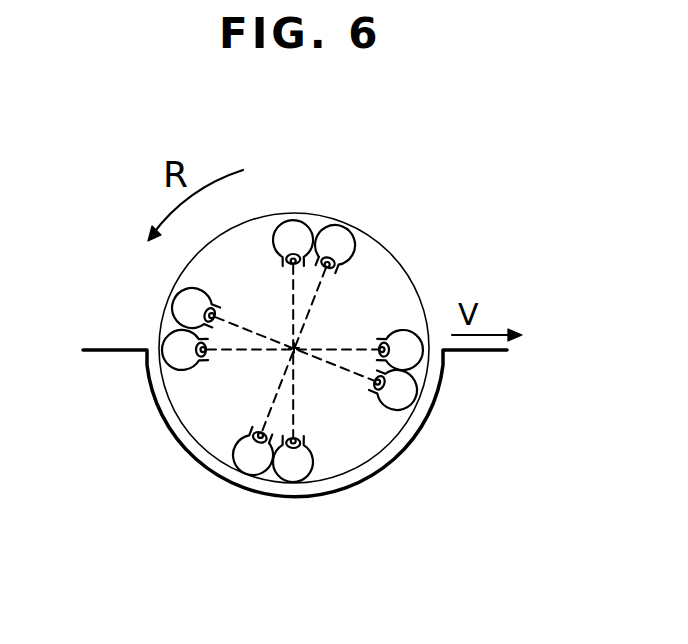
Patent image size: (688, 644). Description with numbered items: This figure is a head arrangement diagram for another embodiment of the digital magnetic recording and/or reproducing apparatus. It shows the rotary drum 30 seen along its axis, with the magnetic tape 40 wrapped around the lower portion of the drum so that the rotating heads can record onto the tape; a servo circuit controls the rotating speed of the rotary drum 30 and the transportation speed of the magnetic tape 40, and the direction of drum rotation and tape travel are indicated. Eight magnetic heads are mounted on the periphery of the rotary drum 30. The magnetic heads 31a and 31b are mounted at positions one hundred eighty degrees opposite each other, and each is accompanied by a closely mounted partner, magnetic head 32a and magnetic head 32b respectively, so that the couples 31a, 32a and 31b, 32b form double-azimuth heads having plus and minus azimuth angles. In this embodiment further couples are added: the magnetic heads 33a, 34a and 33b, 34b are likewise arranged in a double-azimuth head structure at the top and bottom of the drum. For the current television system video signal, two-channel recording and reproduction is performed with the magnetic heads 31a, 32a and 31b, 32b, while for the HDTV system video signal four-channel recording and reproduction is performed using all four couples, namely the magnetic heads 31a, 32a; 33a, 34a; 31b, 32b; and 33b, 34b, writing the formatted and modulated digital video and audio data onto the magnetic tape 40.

The rotary drum 30 is at (415, 282).
The magnetic tape 40 is at (105, 352).
The magnetic head 31a is at (418, 352).
The magnetic head 31b is at (168, 342).
The magnetic head 32a is at (407, 397).
The magnetic head 32b is at (180, 300).
The magnetic head 33a is at (293, 480).
The magnetic head 33b is at (294, 230).
The magnetic head 34a is at (236, 474).
The magnetic head 34b is at (346, 226).